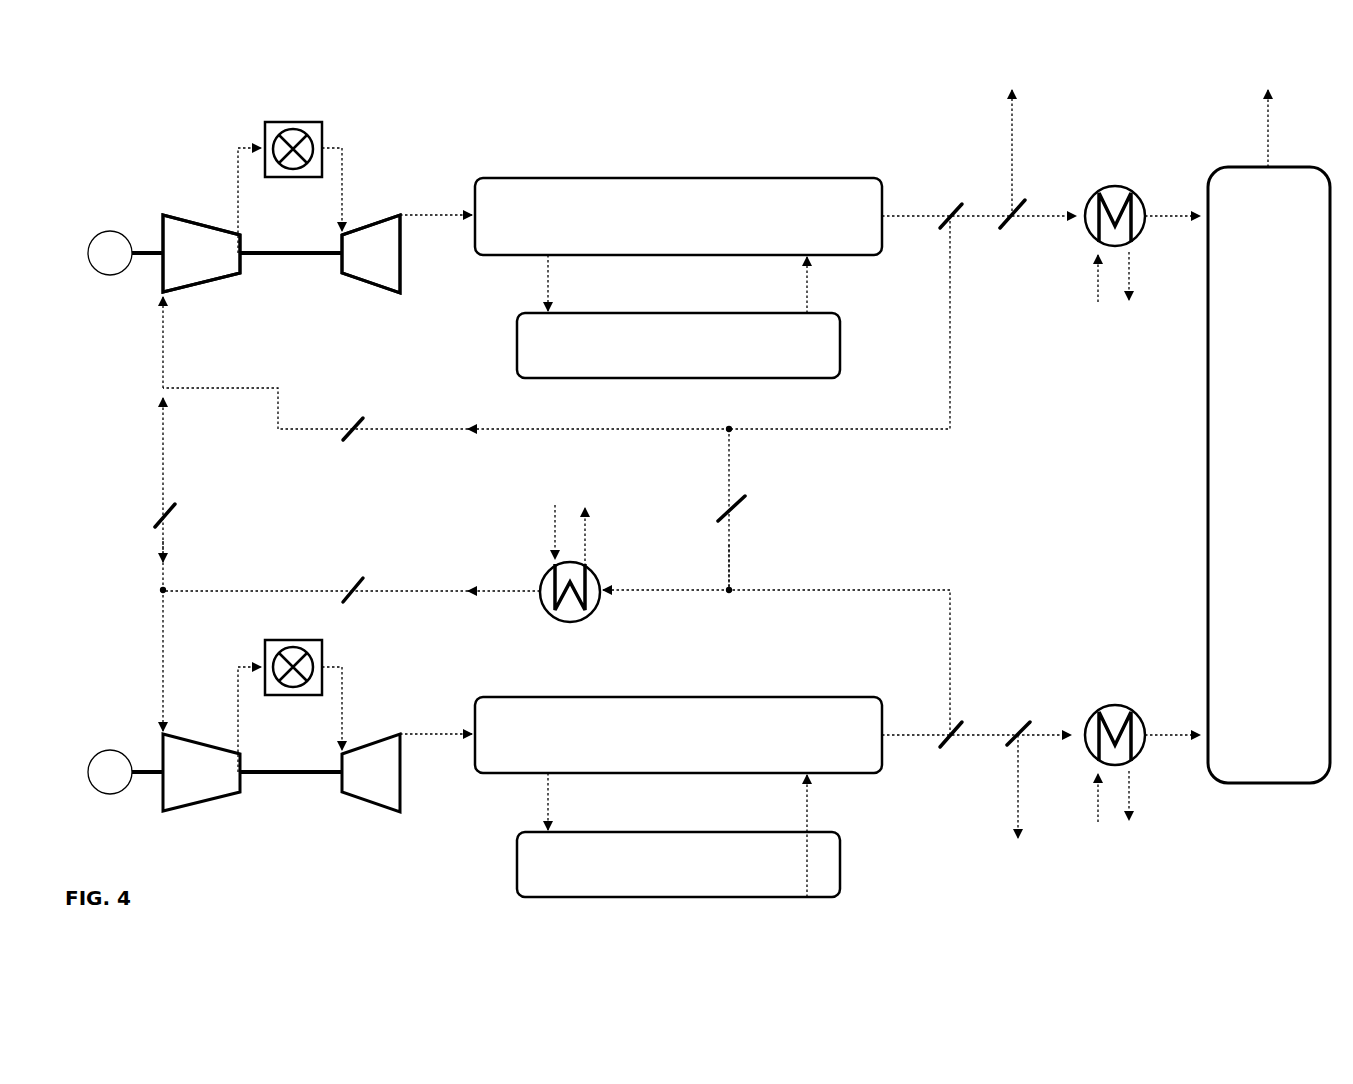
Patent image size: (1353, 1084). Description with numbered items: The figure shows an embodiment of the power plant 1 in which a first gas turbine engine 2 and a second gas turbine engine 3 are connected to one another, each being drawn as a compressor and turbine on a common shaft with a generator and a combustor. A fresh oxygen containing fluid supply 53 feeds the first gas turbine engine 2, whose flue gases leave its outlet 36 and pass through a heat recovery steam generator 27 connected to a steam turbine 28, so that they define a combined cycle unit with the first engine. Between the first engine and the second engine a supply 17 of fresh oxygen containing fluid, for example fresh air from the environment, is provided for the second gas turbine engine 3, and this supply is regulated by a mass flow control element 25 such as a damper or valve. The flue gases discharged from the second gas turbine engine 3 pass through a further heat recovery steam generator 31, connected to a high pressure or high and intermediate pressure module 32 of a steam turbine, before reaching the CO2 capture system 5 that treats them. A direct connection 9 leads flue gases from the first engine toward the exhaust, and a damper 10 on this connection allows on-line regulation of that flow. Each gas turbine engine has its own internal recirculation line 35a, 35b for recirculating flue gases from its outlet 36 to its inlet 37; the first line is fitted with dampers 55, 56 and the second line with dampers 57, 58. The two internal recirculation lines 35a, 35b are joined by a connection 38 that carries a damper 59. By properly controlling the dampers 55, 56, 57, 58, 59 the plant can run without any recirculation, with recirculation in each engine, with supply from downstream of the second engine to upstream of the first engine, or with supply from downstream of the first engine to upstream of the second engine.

The power plant 1 is at (638, 155).
The first gas turbine engine 2 is at (288, 298).
The second gas turbine engine 3 is at (288, 816).
The CO2 capture system 5 is at (1261, 428).
The direct connection 9 is at (1016, 136).
The damper 10 is at (1025, 200).
The supply of fresh oxygen containing fluid 17 is at (160, 541).
The mass flow control element 25 is at (157, 520).
The heat recovery steam generator 27 is at (663, 217).
The steam turbine 28 is at (663, 345).
The heat recovery steam generator 31 is at (668, 736).
The high pressure or high and intermediate pressure module 32 is at (673, 870).
The internal recirculation line 35a is at (956, 373).
The internal recirculation line 35b is at (953, 626).
The outlet 36 is at (400, 215).
The inlet 37 is at (160, 292).
The connection 38 is at (733, 550).
The fresh oxygen containing fluid supply 53 is at (160, 431).
The damper 55 is at (950, 205).
The damper 56 is at (364, 414).
The damper 57 is at (962, 722).
The damper 58 is at (365, 577).
The damper 59 is at (745, 497).